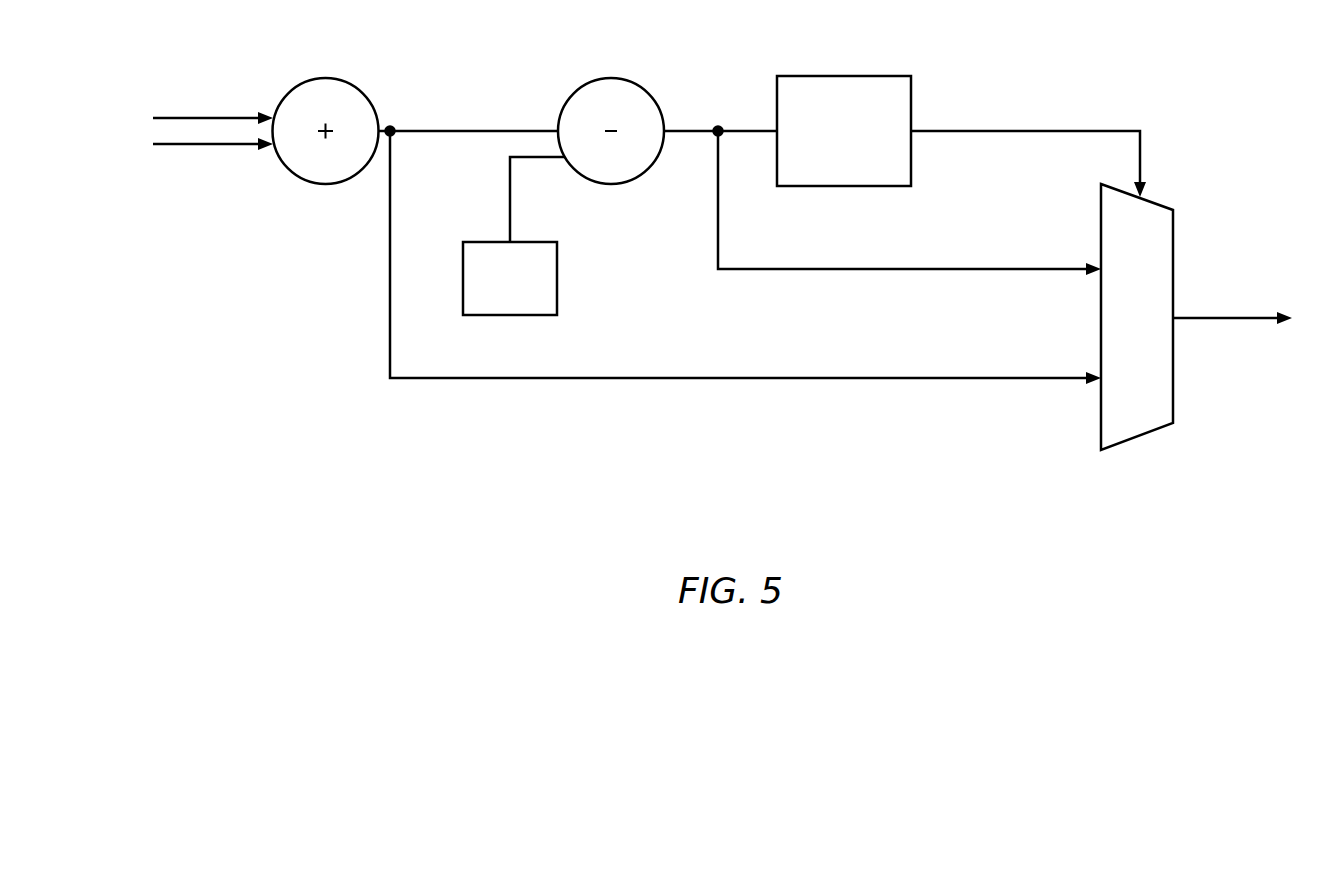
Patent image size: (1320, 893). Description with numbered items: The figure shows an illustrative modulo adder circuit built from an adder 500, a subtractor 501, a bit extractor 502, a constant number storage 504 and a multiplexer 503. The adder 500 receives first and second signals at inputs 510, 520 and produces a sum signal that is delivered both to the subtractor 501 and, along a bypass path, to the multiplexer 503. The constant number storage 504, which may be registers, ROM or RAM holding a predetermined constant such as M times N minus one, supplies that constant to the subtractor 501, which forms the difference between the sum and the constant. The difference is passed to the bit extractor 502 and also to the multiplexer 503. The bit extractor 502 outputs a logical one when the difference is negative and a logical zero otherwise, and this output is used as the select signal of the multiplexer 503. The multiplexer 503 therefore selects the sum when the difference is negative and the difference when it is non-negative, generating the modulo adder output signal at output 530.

The adder 500 is at (327, 78).
The subtractor 501 is at (613, 78).
The bit extractor 502 is at (844, 76).
The multiplexer 503 is at (1137, 438).
The constant number storage 504 is at (557, 279).
The input 510 is at (216, 117).
The input 520 is at (216, 145).
The output 530 is at (1207, 313).